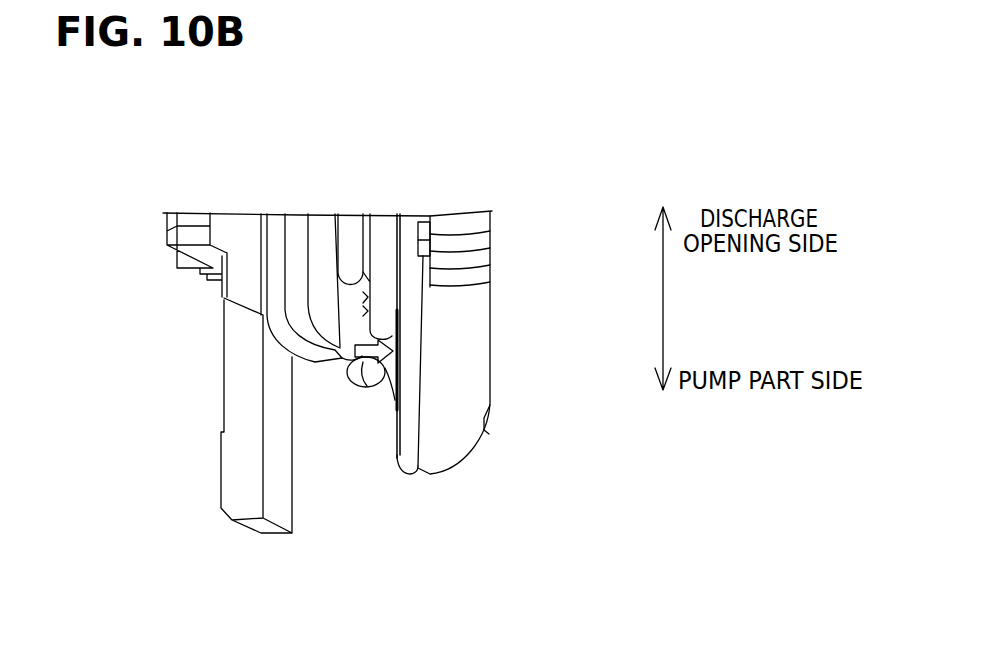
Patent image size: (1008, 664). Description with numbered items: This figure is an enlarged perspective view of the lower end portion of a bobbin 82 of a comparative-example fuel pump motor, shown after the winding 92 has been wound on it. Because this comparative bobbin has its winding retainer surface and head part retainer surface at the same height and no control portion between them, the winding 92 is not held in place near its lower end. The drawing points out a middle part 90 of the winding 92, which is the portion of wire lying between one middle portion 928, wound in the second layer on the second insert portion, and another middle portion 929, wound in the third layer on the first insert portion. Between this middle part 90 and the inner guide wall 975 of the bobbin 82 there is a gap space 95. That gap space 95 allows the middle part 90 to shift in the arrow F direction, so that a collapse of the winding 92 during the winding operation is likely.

The bobbin 82 is at (481, 206).
The middle part 90 is at (350, 367).
The winding 92 is at (303, 211).
The gap space 95 is at (392, 343).
The middle portion 928 is at (336, 214).
The middle portion 929 is at (383, 388).
The inner guide wall 975 is at (463, 362).
The arrow F direction F is at (361, 389).